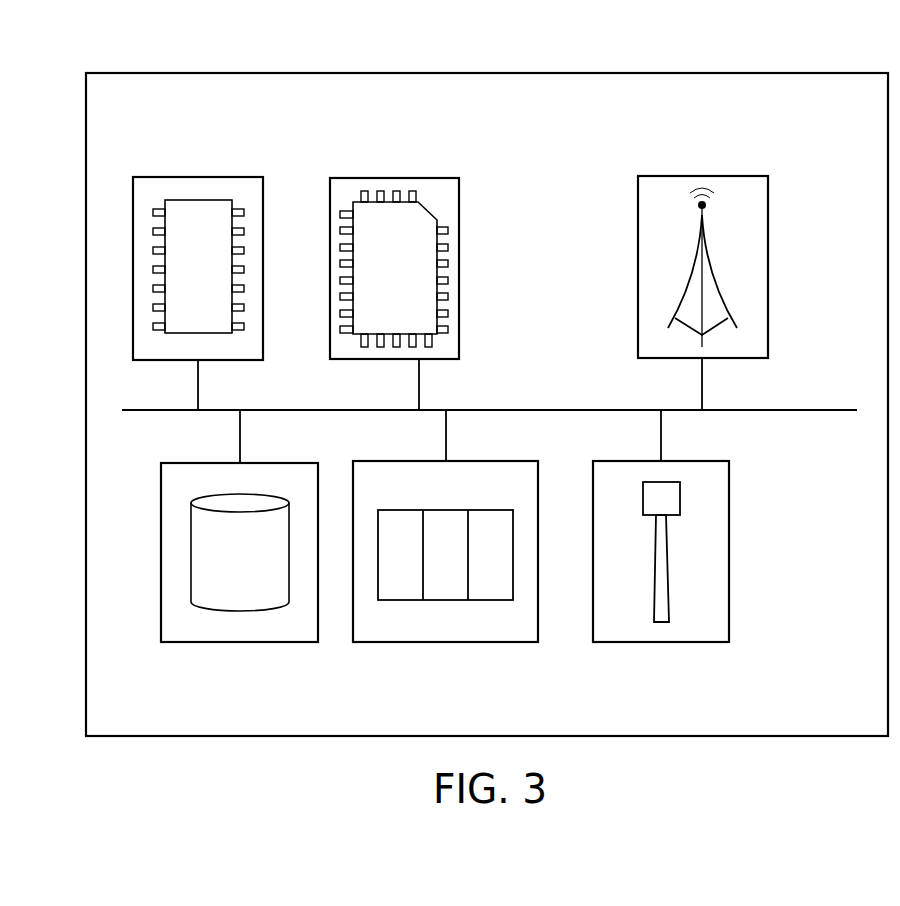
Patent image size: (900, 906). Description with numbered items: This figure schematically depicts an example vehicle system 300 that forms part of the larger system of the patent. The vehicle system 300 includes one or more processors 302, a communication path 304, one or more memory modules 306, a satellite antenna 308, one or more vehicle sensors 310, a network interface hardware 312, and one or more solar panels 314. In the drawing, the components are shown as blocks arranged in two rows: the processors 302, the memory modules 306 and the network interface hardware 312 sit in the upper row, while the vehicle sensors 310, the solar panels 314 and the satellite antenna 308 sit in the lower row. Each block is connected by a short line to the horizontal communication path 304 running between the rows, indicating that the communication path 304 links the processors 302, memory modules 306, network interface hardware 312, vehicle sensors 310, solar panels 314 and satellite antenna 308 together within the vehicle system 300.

The vehicle system 300 is at (800, 73).
The processor 302 is at (198, 177).
The communication path 304 is at (799, 410).
The memory module 306 is at (395, 178).
The satellite antenna 308 is at (661, 642).
The vehicle sensor 310 is at (239, 642).
The network interface hardware 312 is at (702, 176).
The solar panel 314 is at (446, 642).